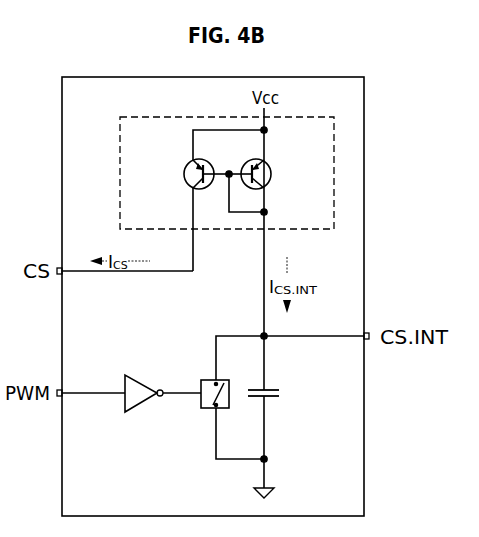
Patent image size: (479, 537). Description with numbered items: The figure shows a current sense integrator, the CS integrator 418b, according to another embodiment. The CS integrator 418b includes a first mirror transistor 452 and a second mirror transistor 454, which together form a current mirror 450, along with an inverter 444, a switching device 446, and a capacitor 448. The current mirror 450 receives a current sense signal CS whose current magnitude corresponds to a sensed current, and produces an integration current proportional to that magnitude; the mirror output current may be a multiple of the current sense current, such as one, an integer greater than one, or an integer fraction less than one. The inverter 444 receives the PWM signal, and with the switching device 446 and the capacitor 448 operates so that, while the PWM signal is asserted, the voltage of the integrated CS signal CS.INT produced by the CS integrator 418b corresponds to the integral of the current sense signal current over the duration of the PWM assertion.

The CS integrator 418b is at (320, 77).
The current mirror 450 is at (210, 180).
The first mirror transistor 452 is at (185, 167).
The second mirror transistor 454 is at (269, 168).
The inverter 444 is at (129, 374).
The switching device 446 is at (200, 407).
The capacitor 448 is at (272, 398).